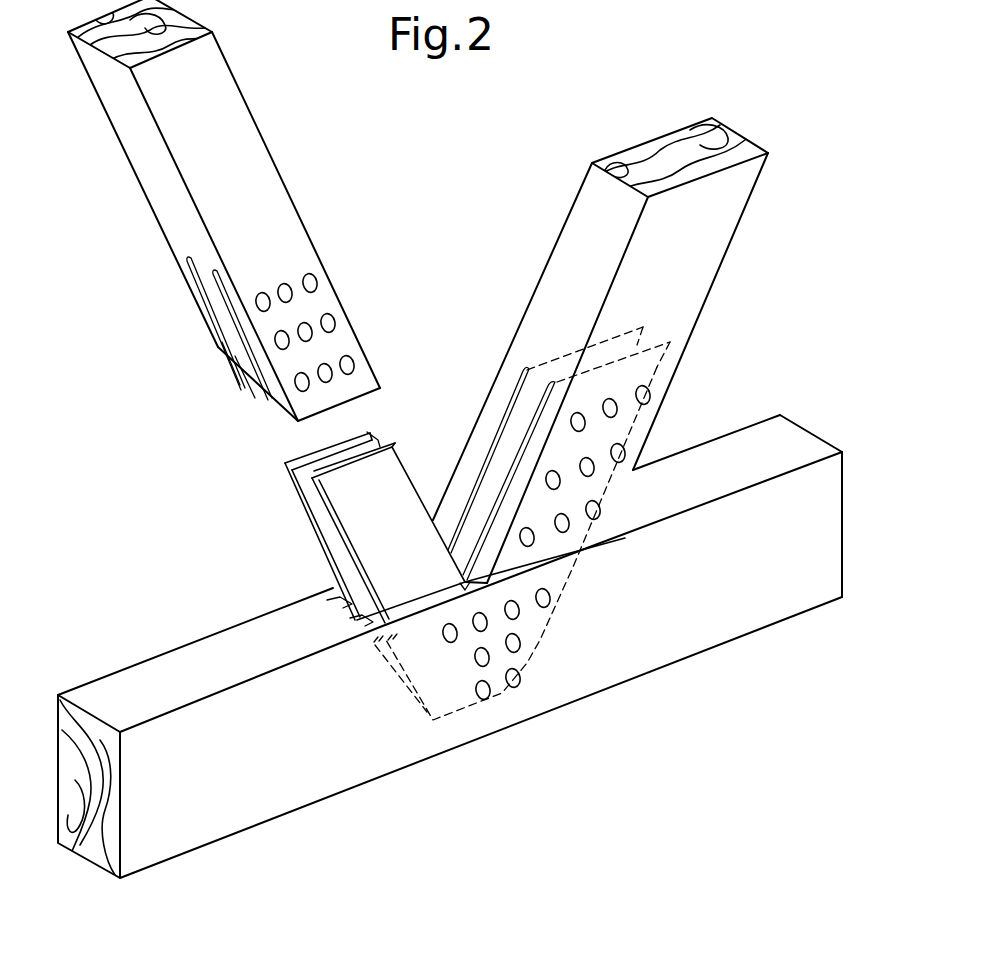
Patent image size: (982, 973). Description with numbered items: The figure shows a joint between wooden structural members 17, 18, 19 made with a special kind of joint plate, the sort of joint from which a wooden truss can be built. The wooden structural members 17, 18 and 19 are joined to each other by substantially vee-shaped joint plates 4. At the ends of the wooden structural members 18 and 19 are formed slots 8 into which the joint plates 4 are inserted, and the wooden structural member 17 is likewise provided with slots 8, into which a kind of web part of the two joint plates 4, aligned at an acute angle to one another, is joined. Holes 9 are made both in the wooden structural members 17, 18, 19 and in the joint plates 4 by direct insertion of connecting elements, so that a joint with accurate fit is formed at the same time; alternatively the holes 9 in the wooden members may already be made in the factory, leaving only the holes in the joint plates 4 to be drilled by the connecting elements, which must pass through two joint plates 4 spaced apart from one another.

The joint plate 4 is at (397, 497).
The slot 8 is at (240, 340).
The hole 9 is at (337, 323).
The wooden structural member 17 is at (637, 643).
The wooden structural member 18 is at (707, 240).
The wooden structural member 19 is at (255, 175).